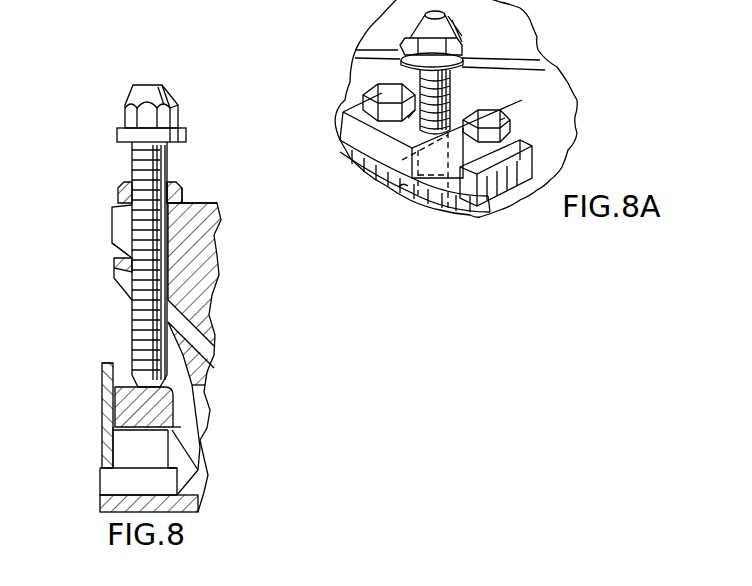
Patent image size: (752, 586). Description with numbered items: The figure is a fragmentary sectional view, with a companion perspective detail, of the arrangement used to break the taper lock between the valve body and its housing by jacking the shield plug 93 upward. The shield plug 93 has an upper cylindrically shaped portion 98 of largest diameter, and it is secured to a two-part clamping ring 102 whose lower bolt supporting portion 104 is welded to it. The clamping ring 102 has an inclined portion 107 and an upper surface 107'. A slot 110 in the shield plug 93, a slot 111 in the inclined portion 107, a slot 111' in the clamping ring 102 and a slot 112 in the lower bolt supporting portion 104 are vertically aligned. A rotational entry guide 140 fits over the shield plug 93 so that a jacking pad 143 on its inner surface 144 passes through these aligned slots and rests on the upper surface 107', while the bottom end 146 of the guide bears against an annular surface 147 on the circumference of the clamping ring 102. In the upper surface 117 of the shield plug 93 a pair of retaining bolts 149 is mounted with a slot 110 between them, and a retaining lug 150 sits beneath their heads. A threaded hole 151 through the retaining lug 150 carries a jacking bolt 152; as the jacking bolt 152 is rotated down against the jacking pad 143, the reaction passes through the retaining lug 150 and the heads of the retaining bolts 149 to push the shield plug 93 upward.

In FIG. 8, the shield plug 93 is at (214, 271).
In FIG. 8A, the shield plug 93 is at (562, 66).
In FIG. 8, the upper cylindrically shaped portion 98 is at (113, 228).
In FIG. 8A, the upper cylindrically shaped portion 98 is at (470, 205).
In FIG. 8, the clamping ring 102 is at (207, 447).
In FIG. 8, the lower bolt supporting portion 104 is at (200, 490).
In FIG. 8, the inclined portion 107 is at (90, 258).
In FIG. 8, the upper surface 107' is at (222, 407).
In FIG. 8, the slot 110 is at (118, 215).
In FIG. 8A, the slot 110 is at (400, 190).
In FIG. 8, the slot 111 is at (95, 286).
In FIG. 8, the slot 111' is at (114, 468).
In FIG. 8, the slot 112 is at (112, 480).
In FIG. 8, the upper surface 117 is at (205, 208).
In FIG. 8A, the upper surface 117 is at (495, 28).
In FIG. 8, the rotational entry guide 140 is at (98, 372).
In FIG. 8, the jacking pad 143 is at (125, 397).
In FIG. 8, the inner surface 144 is at (113, 372).
In FIG. 8, the bottom end 146 is at (110, 445).
In FIG. 8, the annular surface 147 is at (108, 437).
In FIG. 8, the retaining bolt 149 is at (172, 178).
In FIG. 8A, the retaining bolt 149 is at (378, 90).
In FIG. 8, the retaining lug 150 is at (184, 192).
In FIG. 8A, the retaining lug 150 is at (534, 140).
In FIG. 8, the threaded hole 151 is at (137, 183).
In FIG. 8A, the threaded hole 151 is at (458, 115).
In FIG. 8, the jacking bolt 152 is at (133, 161).
In FIG. 8A, the jacking bolt 152 is at (452, 85).